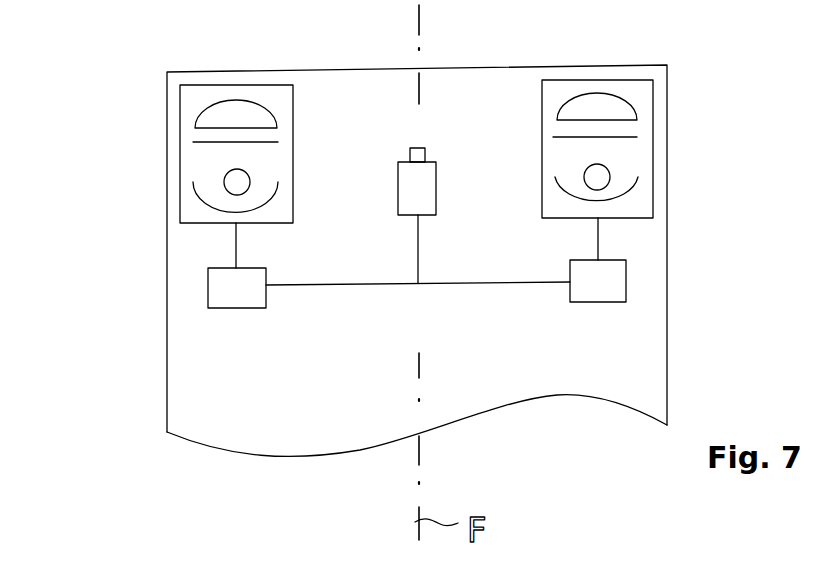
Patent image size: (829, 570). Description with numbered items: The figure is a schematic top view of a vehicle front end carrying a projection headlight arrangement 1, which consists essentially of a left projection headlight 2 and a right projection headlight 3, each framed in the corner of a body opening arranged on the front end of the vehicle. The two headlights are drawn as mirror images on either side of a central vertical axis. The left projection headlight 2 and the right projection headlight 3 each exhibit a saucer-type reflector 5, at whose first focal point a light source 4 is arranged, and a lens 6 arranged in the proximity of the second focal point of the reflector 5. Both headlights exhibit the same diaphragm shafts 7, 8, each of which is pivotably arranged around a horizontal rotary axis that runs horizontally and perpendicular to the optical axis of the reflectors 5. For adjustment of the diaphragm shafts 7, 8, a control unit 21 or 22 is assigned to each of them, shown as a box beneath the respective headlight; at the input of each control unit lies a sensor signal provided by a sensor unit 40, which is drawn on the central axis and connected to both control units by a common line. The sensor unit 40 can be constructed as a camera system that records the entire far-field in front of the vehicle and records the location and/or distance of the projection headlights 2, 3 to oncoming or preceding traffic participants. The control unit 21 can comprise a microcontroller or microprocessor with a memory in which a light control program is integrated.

The projection headlight arrangement 1 is at (278, 372).
The left projection headlight 2 is at (293, 115).
The right projection headlight 3 is at (541, 113).
The light source 4 is at (224, 182).
The saucer-type reflector 5 is at (203, 201).
The lens 6 is at (214, 114).
The diaphragm shaft 7 is at (196, 143).
The diaphragm shaft 8 is at (610, 173).
The control unit 21 is at (208, 300).
The control unit 22 is at (626, 288).
The sensor unit 40 is at (439, 188).